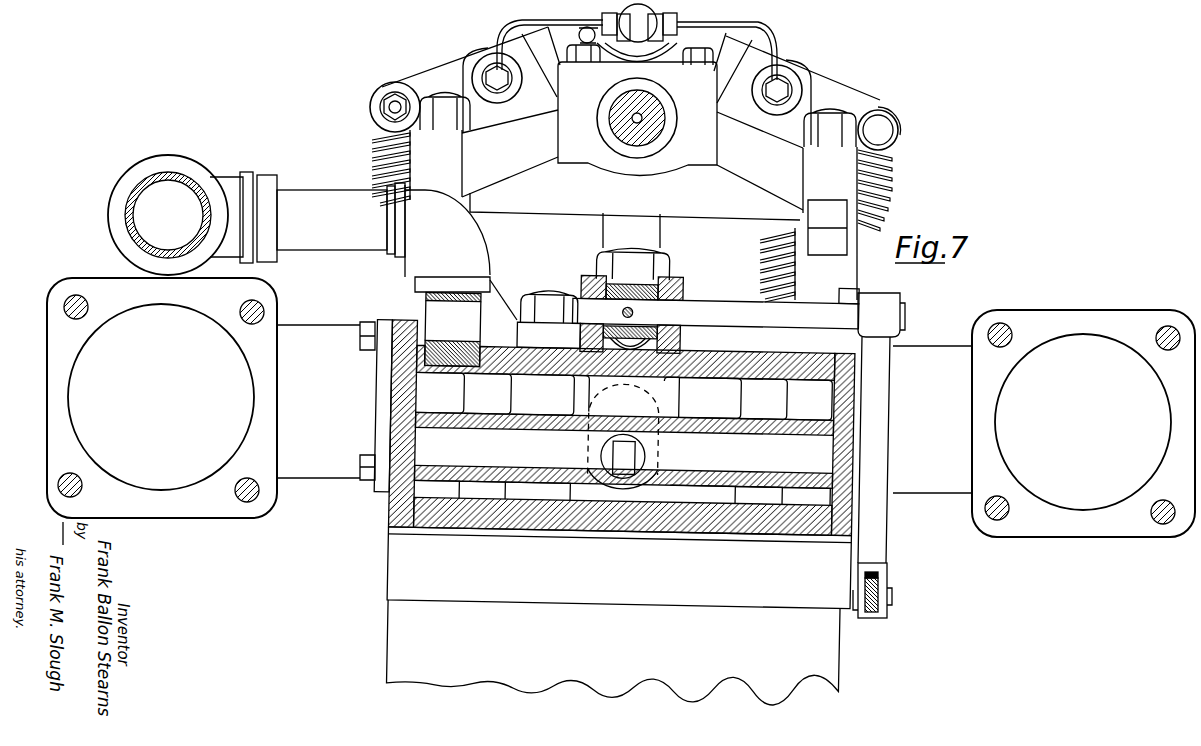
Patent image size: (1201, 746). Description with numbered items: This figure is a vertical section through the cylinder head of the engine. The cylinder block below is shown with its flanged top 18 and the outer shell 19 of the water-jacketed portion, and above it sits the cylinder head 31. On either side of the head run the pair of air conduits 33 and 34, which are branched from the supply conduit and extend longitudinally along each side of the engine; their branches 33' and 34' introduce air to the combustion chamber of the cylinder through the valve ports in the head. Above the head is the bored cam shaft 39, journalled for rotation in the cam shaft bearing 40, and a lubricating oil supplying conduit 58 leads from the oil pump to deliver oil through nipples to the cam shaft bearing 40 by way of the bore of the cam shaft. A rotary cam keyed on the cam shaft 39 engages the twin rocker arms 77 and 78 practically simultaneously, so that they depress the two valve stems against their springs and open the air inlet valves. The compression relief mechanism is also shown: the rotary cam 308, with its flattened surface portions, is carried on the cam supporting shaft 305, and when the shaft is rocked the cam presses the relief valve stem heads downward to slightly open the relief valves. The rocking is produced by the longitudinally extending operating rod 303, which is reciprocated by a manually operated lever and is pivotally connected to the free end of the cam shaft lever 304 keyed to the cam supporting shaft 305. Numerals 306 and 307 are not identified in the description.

The flanged top 18 is at (676, 572).
The outer shell 19 is at (523, 626).
The cylinder head 31 is at (392, 503).
The air conduit 33 is at (1083, 423).
The branch 33' is at (932, 419).
The air conduit 34 is at (162, 398).
The branch 34' is at (326, 401).
The cam shaft 39 is at (668, 131).
The cam shaft bearing 40 is at (604, 133).
The lubricating oil supplying conduit 58 is at (765, 30).
The rocker arm 77 is at (828, 88).
The rocker arm 78 is at (437, 69).
The rod 303 is at (876, 613).
The cam shaft lever 304 is at (878, 541).
The cam supporting shaft 305 is at (708, 312).
The valve bushing 306 is at (684, 279).
The valve guide block 307 is at (580, 278).
The rotary cam 308 is at (580, 332).